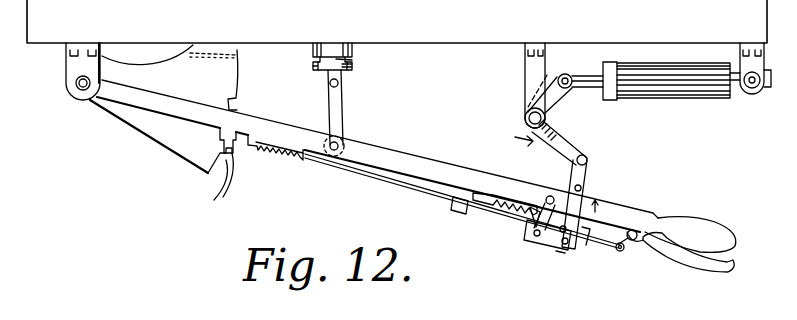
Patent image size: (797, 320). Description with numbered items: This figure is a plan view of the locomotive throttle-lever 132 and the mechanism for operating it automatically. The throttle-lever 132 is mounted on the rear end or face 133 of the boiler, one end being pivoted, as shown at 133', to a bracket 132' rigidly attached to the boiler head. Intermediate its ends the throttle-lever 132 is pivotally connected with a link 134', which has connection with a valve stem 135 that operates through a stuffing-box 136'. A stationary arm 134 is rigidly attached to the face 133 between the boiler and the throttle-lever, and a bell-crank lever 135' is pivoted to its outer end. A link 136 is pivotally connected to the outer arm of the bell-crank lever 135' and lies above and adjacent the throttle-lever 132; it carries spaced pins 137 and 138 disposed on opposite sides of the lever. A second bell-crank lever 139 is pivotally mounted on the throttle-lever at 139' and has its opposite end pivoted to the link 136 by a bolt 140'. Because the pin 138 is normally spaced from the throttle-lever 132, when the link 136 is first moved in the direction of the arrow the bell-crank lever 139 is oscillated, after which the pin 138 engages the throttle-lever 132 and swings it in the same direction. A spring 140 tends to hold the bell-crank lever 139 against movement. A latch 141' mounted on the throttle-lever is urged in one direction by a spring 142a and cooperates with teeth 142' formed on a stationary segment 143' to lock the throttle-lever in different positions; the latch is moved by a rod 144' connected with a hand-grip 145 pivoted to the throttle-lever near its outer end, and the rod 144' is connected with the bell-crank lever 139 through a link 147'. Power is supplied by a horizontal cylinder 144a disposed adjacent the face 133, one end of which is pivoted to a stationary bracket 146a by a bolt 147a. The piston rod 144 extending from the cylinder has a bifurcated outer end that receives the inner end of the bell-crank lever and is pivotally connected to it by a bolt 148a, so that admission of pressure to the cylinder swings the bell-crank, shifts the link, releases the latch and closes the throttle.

The throttle-lever 132 is at (375, 156).
The bracket 132' is at (56, 71).
The rear end or face of the boiler 133 is at (324, 59).
The pivot of the throttle-lever 133' is at (61, 110).
The stationary arm 134 is at (523, 85).
The link 134' is at (367, 113).
The valve stem 135 is at (317, 69).
The bell-crank lever 135' is at (574, 121).
The link 136 is at (628, 207).
The stuffing-box 136' is at (375, 63).
The pin 137 is at (587, 183).
The pin 138 is at (587, 240).
The bell-crank lever 139 is at (547, 242).
The pivot of bell-crank lever 139' is at (540, 192).
The spring 140 is at (505, 192).
The bolt 140' is at (584, 278).
The latch 141' is at (248, 155).
The teeth 142' is at (230, 181).
The spring 142a is at (285, 160).
The stationary segment 143' is at (149, 136).
The piston rod 144 is at (597, 66).
The rod 144' is at (464, 202).
The horizontal cylinder 144a is at (693, 80).
The hand-grip 145 is at (692, 262).
The stationary bracket 146a is at (762, 89).
The link 147' is at (476, 226).
The bolt 147a is at (745, 90).
The bolt 148a is at (560, 73).